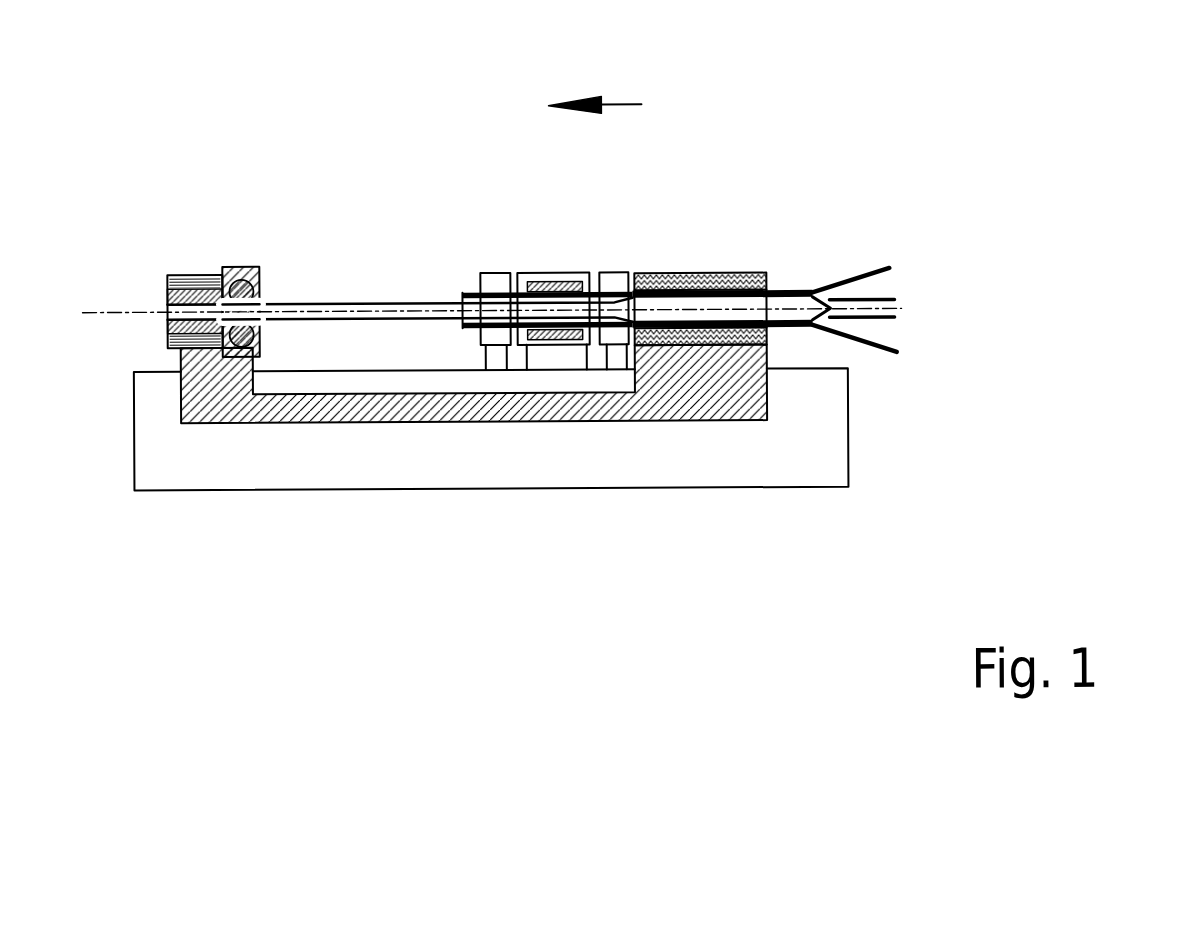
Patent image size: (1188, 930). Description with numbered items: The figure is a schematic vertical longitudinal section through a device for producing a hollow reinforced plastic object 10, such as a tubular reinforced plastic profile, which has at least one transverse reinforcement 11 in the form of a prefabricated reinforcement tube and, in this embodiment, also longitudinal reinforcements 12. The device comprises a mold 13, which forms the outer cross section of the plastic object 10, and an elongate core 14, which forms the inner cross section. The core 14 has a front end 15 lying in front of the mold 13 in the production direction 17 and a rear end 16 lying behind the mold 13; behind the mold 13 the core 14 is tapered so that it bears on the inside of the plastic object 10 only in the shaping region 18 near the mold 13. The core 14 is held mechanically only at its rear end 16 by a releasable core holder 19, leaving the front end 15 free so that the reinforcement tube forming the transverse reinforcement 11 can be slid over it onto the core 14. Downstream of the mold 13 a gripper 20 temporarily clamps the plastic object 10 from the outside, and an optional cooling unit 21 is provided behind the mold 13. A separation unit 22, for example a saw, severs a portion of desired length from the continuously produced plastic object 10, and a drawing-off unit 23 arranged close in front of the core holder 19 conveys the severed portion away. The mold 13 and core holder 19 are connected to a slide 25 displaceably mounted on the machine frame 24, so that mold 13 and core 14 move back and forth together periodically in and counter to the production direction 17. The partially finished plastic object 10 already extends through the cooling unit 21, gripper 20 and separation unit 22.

The hollow reinforced plastic object 10 is at (472, 293).
The transverse reinforcement 11 is at (877, 301).
The longitudinal reinforcements 12 is at (860, 277).
The mold 13 is at (712, 274).
The elongate core 14 is at (393, 303).
The front end 15 is at (815, 298).
The rear end 16 is at (168, 307).
The production direction 17 is at (625, 104).
The shaping region 18 is at (662, 303).
The core holder 19 is at (193, 276).
The gripper 20 is at (552, 283).
The cooling unit 21 is at (610, 283).
The separation unit 22 is at (495, 283).
The drawing-off unit 23 is at (238, 266).
The machine frame 24 is at (795, 472).
The slide 25 is at (550, 400).